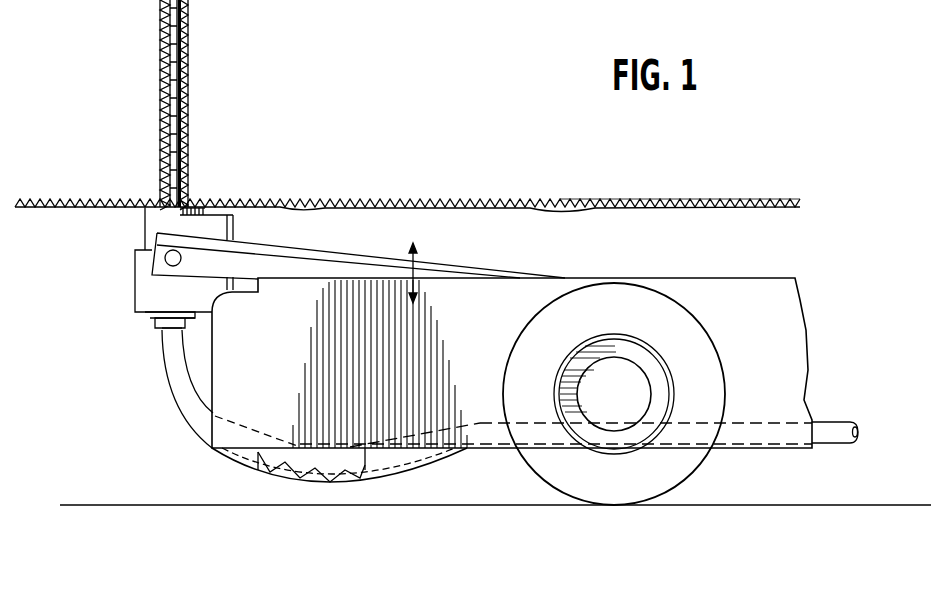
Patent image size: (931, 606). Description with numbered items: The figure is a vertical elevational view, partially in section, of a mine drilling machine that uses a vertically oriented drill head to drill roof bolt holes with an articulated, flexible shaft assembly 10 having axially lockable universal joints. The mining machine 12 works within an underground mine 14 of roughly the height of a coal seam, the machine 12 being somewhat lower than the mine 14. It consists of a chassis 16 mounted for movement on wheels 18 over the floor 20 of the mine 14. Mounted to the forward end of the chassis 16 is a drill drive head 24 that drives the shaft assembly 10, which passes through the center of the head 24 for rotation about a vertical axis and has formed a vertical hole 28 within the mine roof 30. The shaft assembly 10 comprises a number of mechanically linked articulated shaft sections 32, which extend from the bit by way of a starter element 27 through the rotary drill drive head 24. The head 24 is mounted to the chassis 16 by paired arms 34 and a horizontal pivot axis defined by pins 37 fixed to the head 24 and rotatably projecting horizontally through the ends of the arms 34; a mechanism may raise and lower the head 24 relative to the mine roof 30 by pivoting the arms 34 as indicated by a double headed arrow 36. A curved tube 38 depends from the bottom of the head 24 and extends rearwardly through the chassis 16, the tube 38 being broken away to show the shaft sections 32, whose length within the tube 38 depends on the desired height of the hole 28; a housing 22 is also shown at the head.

The articulated, flexible shaft assembly 10 is at (188, 153).
The mining machine 12 is at (375, 256).
The underground mine 14 is at (612, 225).
The chassis 16 is at (690, 278).
The wheels 18 is at (708, 355).
The floor 20 is at (722, 505).
The nozzle housing 22 is at (140, 300).
The drill drive head 24 is at (148, 222).
The starter element 27 is at (182, 22).
The vertical hole 28 is at (185, 68).
The mine roof 30 is at (297, 212).
The articulated shaft sections 32 is at (166, 110).
The paired arms 34 is at (304, 266).
The double headed arrow 36 is at (420, 270).
The pins 37 is at (181, 258).
The curved tube 38 is at (178, 368).